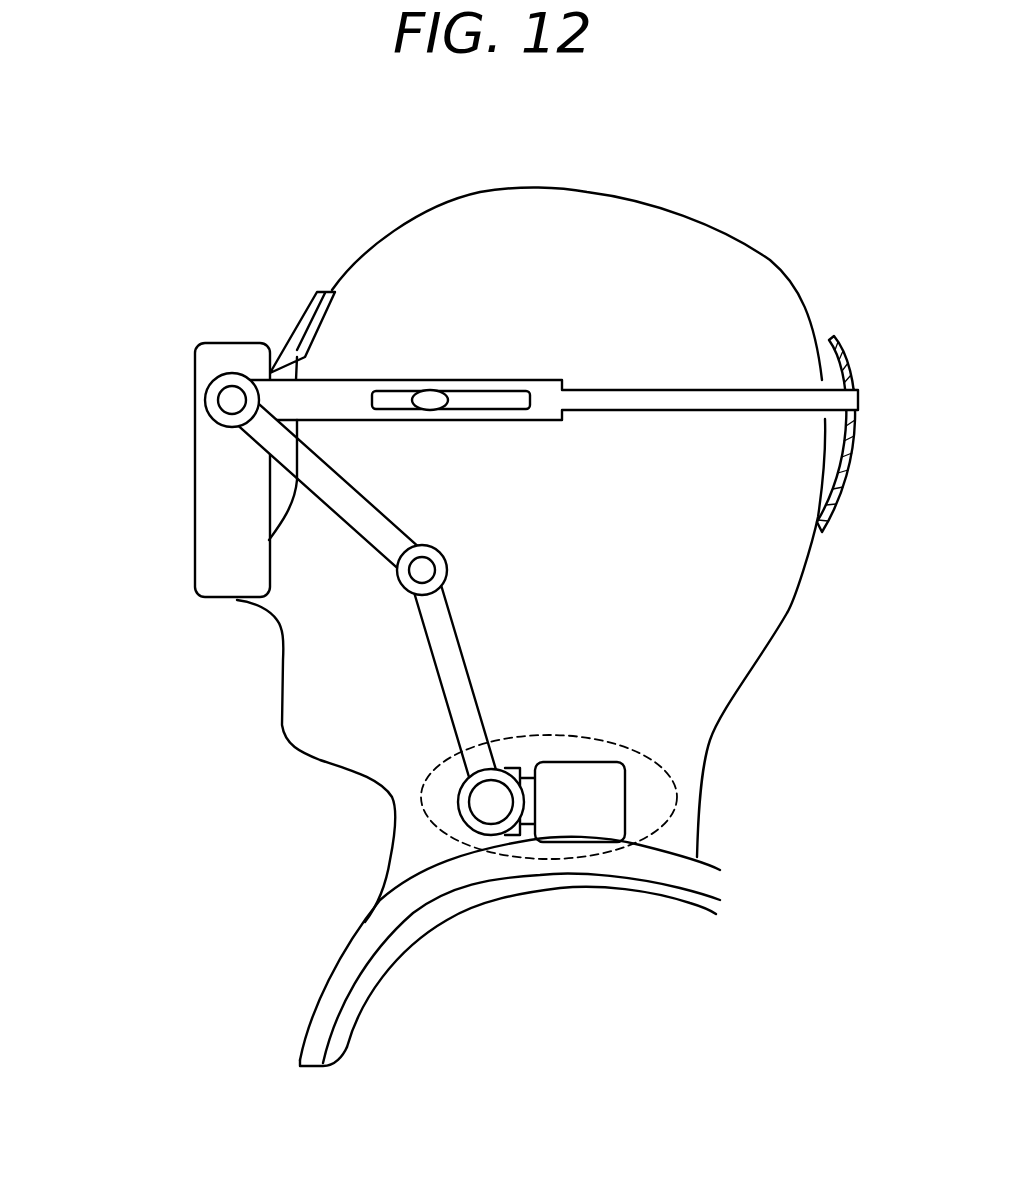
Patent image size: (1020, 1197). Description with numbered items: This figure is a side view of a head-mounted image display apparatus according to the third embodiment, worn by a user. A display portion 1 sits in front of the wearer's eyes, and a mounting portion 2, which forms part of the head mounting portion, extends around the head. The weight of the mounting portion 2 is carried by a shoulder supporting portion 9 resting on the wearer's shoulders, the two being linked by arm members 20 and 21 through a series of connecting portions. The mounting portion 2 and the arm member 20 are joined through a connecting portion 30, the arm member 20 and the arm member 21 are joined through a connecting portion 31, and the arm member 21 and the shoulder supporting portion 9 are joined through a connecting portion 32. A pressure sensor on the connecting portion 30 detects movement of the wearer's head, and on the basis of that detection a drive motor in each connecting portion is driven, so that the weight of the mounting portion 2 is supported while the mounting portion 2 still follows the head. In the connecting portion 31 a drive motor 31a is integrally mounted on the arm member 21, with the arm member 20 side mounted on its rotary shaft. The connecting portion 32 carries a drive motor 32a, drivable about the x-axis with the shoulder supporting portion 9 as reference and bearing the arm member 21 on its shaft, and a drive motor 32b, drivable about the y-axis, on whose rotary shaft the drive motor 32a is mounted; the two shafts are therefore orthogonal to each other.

The display portion 1 is at (235, 357).
The mounting portion 2 is at (548, 388).
The shoulder supporting portion 9 is at (385, 930).
The arm member 20 is at (333, 498).
The arm member 21 is at (452, 683).
The connecting portion 30 is at (224, 404).
The connecting portion 31 is at (393, 592).
The drive motor 31a is at (424, 570).
The connecting portion 32 is at (436, 833).
The drive motor 32a is at (490, 815).
The drive motor 32b is at (593, 825).